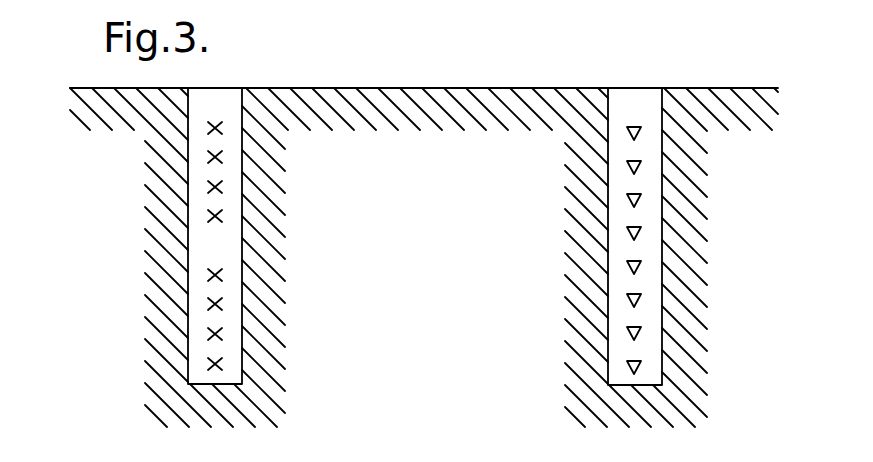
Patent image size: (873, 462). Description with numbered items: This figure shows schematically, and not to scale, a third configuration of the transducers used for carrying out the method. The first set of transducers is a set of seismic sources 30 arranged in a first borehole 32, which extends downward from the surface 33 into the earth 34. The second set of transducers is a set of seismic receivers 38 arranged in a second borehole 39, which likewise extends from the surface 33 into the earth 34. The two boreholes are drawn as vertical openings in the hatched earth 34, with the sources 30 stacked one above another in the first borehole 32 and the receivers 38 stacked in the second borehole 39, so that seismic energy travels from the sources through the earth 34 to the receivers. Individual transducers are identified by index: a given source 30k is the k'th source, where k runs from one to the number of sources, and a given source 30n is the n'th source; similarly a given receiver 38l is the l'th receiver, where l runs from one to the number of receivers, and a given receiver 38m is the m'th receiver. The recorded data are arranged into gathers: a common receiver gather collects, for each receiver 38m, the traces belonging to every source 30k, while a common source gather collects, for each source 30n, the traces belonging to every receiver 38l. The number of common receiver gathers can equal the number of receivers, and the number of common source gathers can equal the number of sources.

The seismic sources 30 is at (208, 216).
The n'th seismic source 30n is at (222, 188).
The k'th seismic source 30k is at (222, 304).
The first borehole 32 is at (187, 384).
The surface 33 is at (394, 88).
The earth 34 is at (447, 271).
The seismic receivers 38 is at (642, 200).
The l'th seismic receiver 38l is at (640, 234).
The m'th seismic receiver 38m is at (640, 268).
The second borehole 39 is at (662, 385).